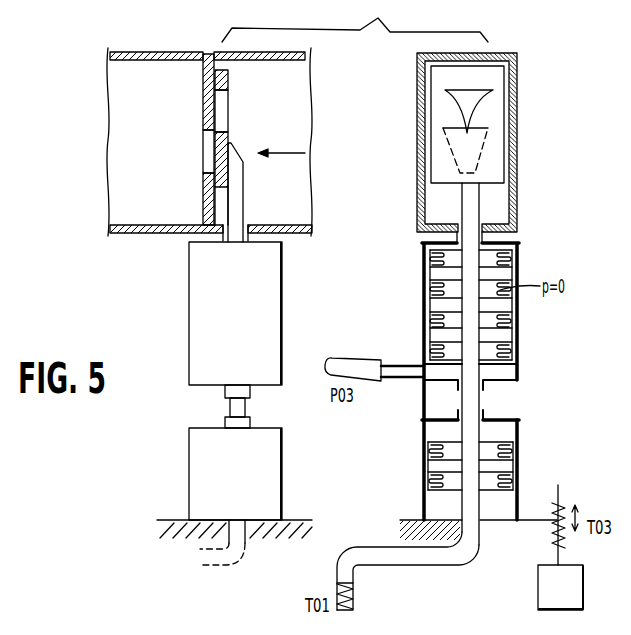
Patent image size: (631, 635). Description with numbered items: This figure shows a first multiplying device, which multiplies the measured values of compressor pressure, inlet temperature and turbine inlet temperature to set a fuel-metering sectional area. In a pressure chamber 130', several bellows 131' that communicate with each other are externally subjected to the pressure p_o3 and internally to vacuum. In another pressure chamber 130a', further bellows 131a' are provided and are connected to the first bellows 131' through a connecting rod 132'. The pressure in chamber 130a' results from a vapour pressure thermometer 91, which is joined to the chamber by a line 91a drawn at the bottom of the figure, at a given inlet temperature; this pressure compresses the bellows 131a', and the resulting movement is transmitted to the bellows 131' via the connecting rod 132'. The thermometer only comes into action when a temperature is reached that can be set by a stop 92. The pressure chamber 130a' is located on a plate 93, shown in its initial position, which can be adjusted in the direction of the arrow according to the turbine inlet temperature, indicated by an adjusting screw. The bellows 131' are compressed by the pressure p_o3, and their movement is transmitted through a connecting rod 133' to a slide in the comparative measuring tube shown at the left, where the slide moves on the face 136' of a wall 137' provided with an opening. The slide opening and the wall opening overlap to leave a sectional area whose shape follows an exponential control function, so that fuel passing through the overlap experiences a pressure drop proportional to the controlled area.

The vapour pressure thermometer 91 is at (351, 588).
The conduit 91a is at (427, 557).
The stop 92 is at (552, 383).
The plate (base) 93 is at (535, 520).
The pressure chamber 130' is at (500, 331).
The pressure chamber 130a' is at (502, 470).
The bellows 131' is at (441, 305).
The bellows 131a' is at (435, 466).
The connecting rod 132' is at (444, 324).
The connecting rod 133' is at (428, 364).
The face 136' is at (182, 92).
The wall 137' is at (182, 199).